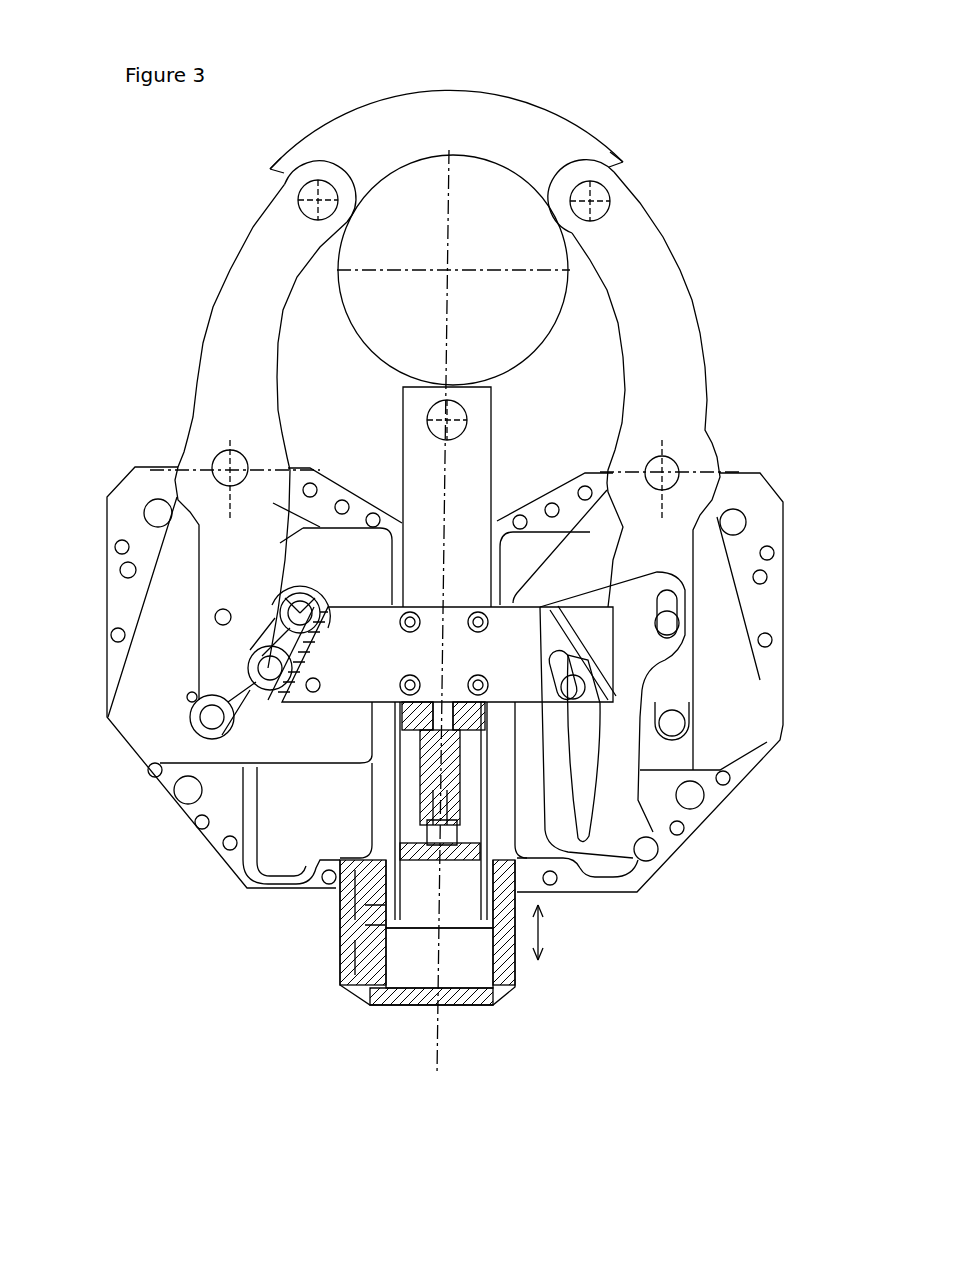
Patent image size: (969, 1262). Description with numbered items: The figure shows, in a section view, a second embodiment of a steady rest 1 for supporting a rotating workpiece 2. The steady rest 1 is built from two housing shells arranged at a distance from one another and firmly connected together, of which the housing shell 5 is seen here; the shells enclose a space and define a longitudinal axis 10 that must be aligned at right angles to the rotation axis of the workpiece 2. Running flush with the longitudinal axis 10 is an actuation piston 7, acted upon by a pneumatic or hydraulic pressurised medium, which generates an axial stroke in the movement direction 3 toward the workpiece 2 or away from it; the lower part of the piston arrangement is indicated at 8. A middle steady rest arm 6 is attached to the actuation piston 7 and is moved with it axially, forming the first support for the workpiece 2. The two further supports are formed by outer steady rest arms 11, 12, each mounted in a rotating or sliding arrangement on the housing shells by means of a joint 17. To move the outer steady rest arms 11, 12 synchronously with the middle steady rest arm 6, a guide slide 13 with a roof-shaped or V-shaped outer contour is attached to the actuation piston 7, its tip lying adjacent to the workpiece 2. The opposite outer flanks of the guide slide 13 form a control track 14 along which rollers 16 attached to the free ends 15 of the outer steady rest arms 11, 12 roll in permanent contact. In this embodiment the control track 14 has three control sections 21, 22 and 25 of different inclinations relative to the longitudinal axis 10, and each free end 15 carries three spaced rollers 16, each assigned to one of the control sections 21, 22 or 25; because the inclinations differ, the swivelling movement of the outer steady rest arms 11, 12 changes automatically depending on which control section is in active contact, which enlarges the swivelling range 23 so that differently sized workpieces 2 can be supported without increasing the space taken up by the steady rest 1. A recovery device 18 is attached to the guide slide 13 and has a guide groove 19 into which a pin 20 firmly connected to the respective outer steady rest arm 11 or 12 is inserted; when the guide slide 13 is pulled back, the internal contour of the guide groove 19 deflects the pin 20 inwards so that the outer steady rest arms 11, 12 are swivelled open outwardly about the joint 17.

The steady rest 1 is at (590, 75).
The workpiece 2 is at (540, 247).
The movement direction 3 is at (541, 943).
The housing shell 5 is at (315, 878).
The middle steady rest arm 6 is at (423, 485).
The actuation piston 7 is at (338, 972).
The piston 8 is at (505, 995).
The longitudinal axis 10 is at (450, 578).
The outer steady rest arm 11 is at (685, 355).
The outer steady rest arm 12 is at (217, 328).
The guide slide 13 is at (372, 707).
The control track 14 is at (258, 660).
The free end 15 is at (245, 682).
The roller 16 is at (215, 616).
The joint 17 is at (220, 463).
The recovery device 18 is at (622, 667).
The guide groove 19 is at (587, 782).
The pin 20 is at (680, 623).
The control section 21 is at (302, 618).
The control section 22 is at (310, 630).
The swivelling range 23 is at (492, 93).
The control section 25 is at (298, 610).